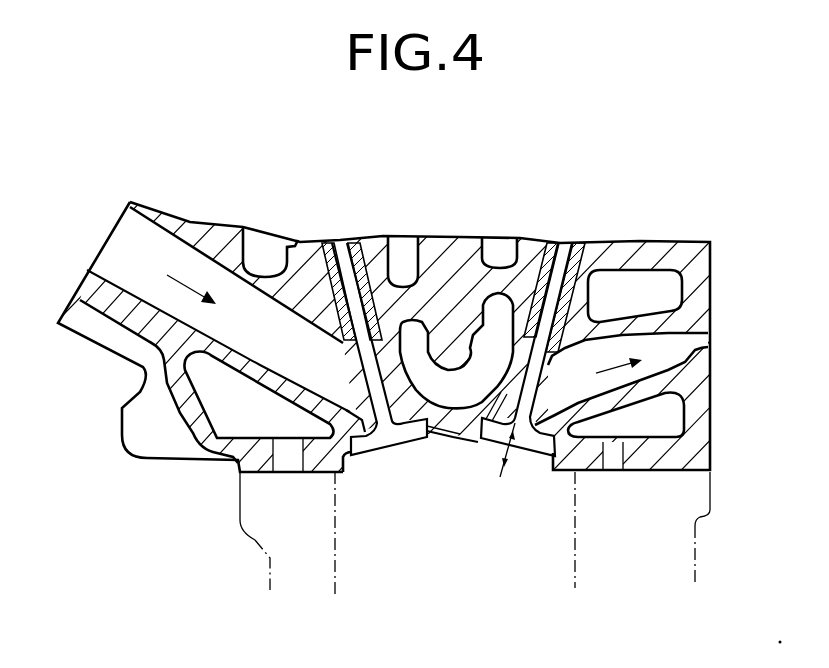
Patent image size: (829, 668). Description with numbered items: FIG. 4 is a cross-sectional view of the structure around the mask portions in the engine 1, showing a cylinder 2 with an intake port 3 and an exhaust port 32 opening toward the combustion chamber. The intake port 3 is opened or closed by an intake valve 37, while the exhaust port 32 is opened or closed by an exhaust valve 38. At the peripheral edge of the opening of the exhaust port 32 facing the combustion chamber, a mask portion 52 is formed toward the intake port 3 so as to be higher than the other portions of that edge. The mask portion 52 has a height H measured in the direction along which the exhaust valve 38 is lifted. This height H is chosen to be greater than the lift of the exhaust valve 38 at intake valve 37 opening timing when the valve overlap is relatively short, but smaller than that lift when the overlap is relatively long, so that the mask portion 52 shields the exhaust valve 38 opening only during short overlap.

The engine 1 is at (712, 266).
The cylinder 2 is at (573, 538).
The intake port 3 is at (122, 280).
The exhaust port 32 is at (700, 347).
The intake valve 37 is at (338, 257).
The exhaust valve 38 is at (563, 253).
The mask portion 52 is at (462, 440).
The height of mask portion H is at (506, 460).